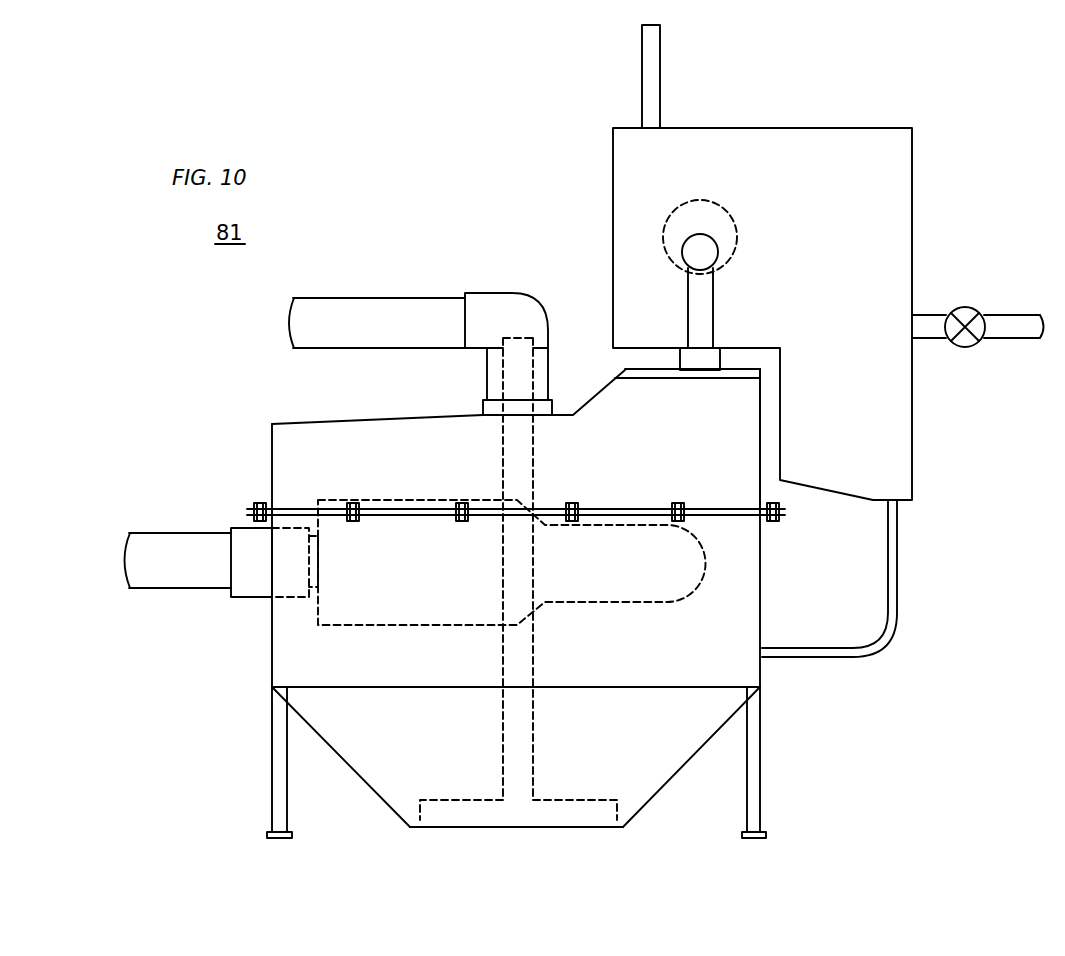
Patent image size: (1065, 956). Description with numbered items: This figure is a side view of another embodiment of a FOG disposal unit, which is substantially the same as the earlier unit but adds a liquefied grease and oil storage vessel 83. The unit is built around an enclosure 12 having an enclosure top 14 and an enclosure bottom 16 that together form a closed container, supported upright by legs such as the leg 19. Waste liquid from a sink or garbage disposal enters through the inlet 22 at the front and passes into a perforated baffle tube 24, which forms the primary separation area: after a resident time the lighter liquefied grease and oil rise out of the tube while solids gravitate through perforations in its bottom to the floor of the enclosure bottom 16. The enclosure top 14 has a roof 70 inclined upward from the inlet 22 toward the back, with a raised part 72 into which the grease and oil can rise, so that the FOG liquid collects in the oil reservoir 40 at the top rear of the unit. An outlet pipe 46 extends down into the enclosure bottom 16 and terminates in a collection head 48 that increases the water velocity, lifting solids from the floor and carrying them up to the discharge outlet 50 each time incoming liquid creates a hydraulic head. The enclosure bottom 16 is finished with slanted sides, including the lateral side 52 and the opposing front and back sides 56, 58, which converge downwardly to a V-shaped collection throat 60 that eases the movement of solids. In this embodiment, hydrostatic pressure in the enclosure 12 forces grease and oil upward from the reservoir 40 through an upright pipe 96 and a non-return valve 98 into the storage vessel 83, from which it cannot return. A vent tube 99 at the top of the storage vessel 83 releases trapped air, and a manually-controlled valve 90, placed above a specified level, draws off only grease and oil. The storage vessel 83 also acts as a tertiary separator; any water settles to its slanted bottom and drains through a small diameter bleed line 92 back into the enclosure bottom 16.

The enclosure 12 is at (254, 418).
The enclosure top 14 is at (270, 470).
The enclosure bottom 16 is at (270, 652).
The leg 19 is at (762, 748).
The inlet 22 is at (147, 530).
The perforated baffle tube 24 is at (626, 612).
The oil reservoir 40 is at (770, 396).
The outlet pipe 46 is at (534, 728).
The collection head 48 is at (590, 788).
The discharge outlet 50 is at (383, 298).
The slanted lateral side 52 is at (390, 778).
The slanted front side 56 is at (341, 768).
The slanted back side 58 is at (695, 760).
The V-shaped collection throat 60 is at (622, 829).
The roof 70 is at (353, 415).
The raised part 72 is at (628, 368).
The storage vessel 83 is at (914, 204).
The manually-controlled valve 90 is at (966, 306).
The bleed line 92 is at (898, 574).
The upright pipe 96 is at (714, 310).
The non-return valve 98 is at (732, 224).
The vent tube 99 is at (661, 76).